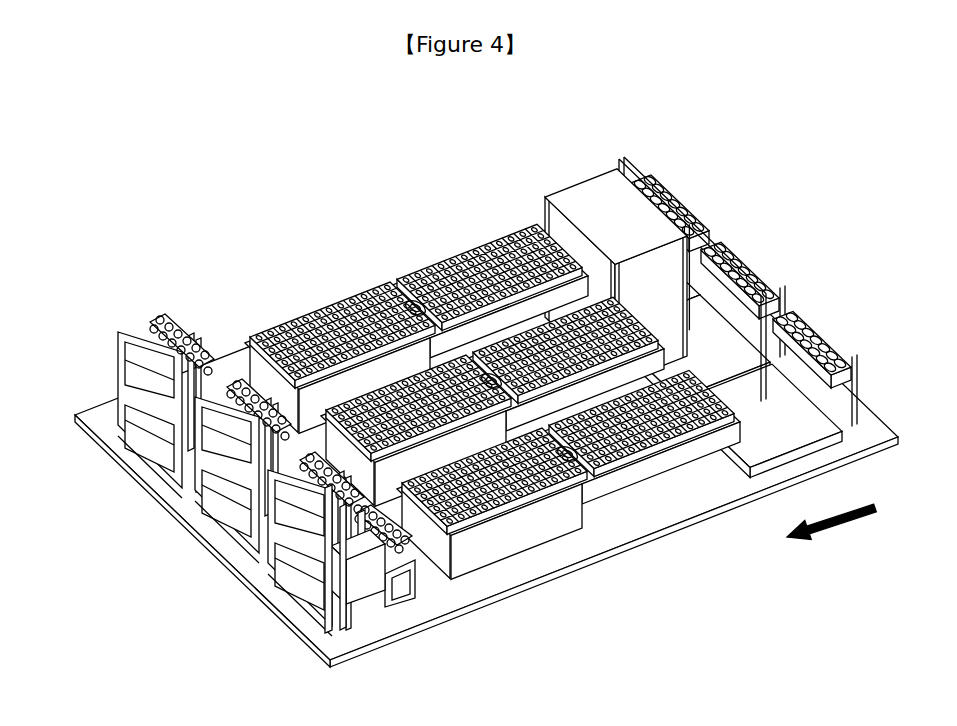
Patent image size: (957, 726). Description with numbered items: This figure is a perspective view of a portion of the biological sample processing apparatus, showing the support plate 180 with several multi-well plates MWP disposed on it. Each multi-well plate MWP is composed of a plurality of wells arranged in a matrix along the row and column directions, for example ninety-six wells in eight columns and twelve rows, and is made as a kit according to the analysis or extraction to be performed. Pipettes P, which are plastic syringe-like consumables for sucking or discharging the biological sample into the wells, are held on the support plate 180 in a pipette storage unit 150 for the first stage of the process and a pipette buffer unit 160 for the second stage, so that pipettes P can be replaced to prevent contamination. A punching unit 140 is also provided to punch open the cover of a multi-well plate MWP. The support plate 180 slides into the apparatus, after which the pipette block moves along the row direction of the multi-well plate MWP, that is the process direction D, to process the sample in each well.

The punching unit 140 is at (118, 355).
The pipette storage unit 150 is at (597, 195).
The pipette buffer unit 160 is at (365, 595).
The support plate 180 is at (690, 500).
The multi-well plate MWP is at (455, 247).
The pipette P is at (178, 322).
The process direction D is at (831, 509).